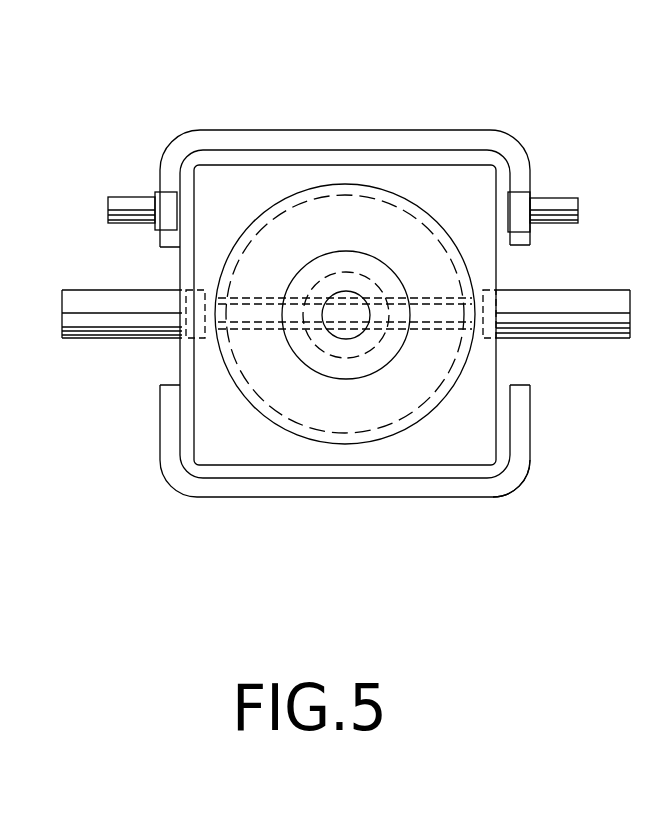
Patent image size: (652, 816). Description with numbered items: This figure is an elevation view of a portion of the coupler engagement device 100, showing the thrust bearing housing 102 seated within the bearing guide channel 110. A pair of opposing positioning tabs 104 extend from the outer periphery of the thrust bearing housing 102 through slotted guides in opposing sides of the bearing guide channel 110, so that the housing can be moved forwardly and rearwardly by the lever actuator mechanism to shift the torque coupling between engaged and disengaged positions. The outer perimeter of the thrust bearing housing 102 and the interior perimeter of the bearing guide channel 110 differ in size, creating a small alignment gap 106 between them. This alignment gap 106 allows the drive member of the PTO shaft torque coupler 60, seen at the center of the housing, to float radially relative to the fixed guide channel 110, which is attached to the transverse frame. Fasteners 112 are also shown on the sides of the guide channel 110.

The coupler engagement device 100 is at (513, 92).
The thrust bearing housing 102 is at (478, 370).
The positioning tabs 104 is at (144, 292).
The alignment gap 106 is at (303, 157).
The bearing guide channel 110 is at (505, 490).
The fastener stud and nut 112 is at (138, 197).
The PTO shaft torque coupler 60 is at (403, 441).